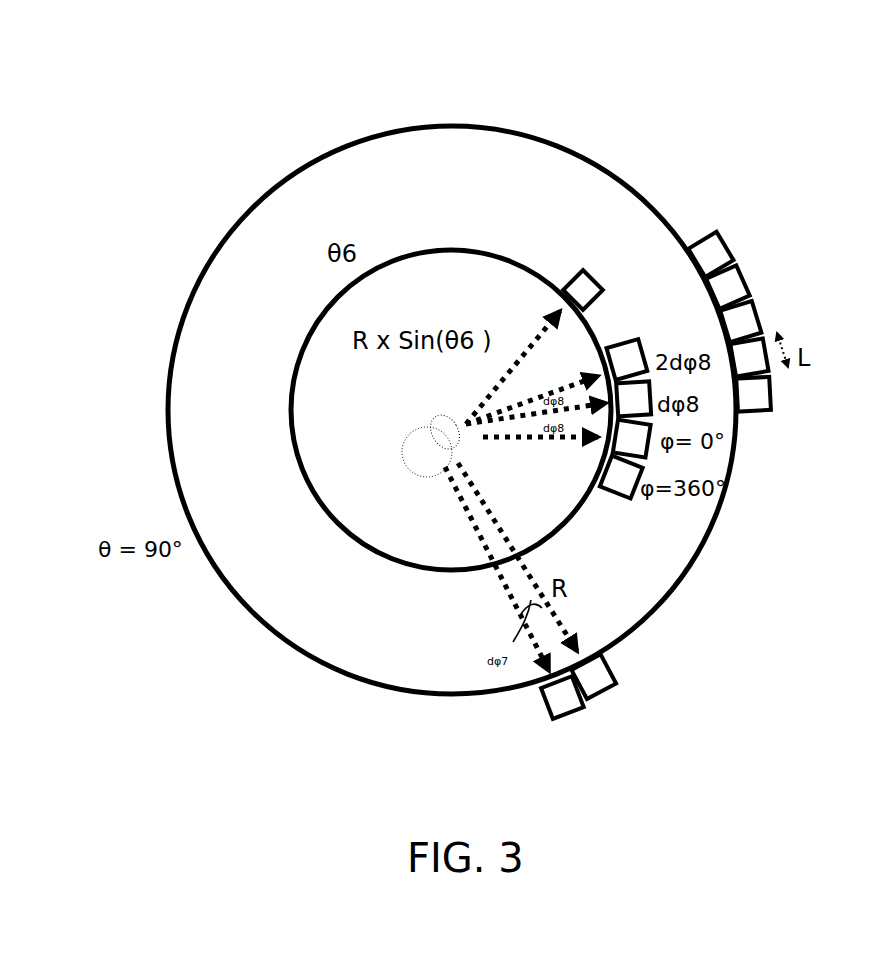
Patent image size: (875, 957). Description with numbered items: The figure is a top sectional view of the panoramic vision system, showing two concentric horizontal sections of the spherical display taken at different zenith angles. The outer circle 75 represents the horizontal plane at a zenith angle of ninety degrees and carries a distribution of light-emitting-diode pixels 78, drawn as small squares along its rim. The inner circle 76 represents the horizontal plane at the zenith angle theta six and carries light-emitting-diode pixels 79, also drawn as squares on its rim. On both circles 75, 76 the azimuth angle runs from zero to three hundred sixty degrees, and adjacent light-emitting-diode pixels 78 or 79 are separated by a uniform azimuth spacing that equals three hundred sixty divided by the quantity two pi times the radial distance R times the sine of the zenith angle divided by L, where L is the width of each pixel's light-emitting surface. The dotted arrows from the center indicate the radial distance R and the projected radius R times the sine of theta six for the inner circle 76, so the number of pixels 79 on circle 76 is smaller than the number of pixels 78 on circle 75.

The circle 75 is at (240, 603).
The circle 76 is at (293, 443).
The light-emitting-diode pixels 78 is at (724, 240).
The light-emitting-diode pixels 79 is at (583, 282).